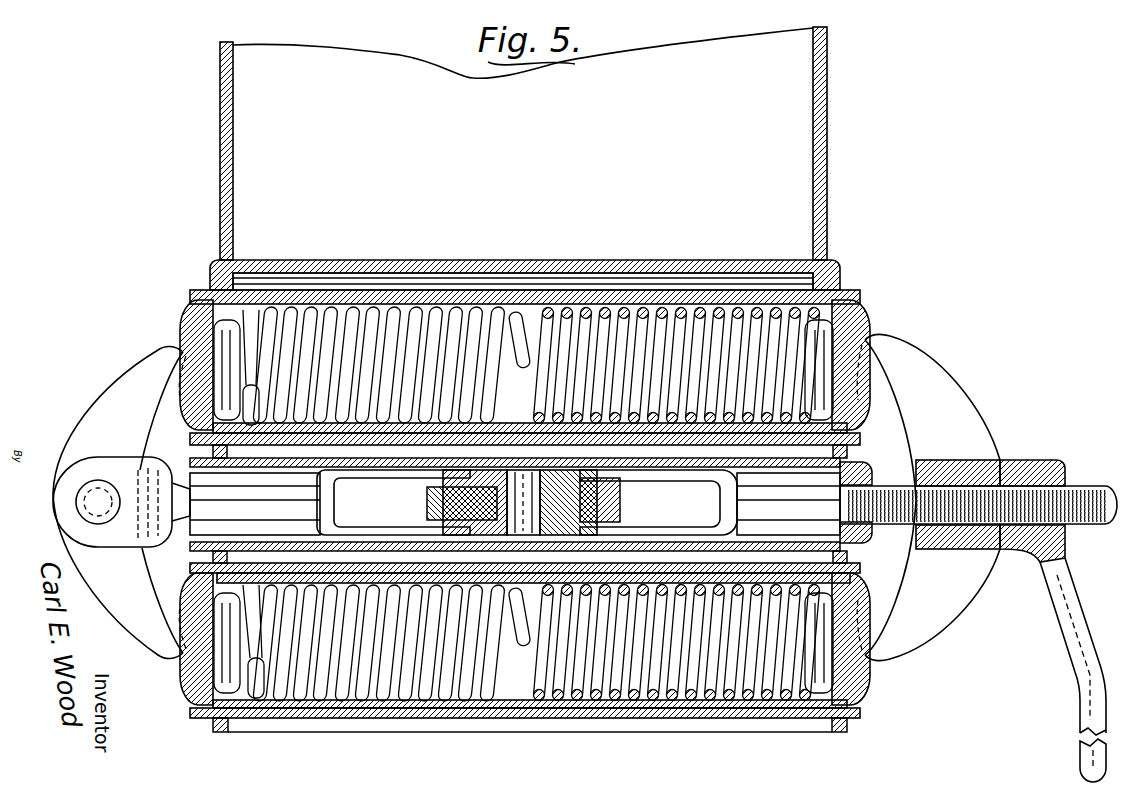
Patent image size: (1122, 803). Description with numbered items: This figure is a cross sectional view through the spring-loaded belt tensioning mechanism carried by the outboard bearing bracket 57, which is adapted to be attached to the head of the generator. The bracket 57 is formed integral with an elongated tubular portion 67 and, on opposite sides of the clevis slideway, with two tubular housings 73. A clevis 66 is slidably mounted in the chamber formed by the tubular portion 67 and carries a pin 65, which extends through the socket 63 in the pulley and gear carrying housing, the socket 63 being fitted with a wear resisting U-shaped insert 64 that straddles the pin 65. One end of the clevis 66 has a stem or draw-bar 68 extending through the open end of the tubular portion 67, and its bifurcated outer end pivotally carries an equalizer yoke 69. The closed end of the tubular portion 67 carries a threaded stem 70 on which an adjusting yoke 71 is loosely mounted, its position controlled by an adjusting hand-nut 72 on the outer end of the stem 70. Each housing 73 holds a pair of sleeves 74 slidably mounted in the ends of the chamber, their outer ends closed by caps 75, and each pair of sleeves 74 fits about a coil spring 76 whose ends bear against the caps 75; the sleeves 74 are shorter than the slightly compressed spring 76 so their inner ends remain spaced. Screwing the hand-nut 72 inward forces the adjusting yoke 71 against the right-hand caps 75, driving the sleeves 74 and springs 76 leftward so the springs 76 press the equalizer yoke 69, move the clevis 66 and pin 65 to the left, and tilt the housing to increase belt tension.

The bracket 57 is at (333, 65).
The socket 63 is at (427, 511).
The U-shaped insert 64 is at (505, 470).
The pin 65 is at (527, 478).
The clevis 66 is at (676, 535).
The tubular portion 67 is at (772, 540).
The stem or draw-bar 68 is at (243, 512).
The equalizer yoke 69 is at (70, 446).
The threaded stem 70 is at (890, 490).
The adjusting yoke 71 is at (994, 442).
The adjusting hand-nut 72 is at (1027, 462).
The tubular housing 73 is at (290, 292).
The sleeve 74 is at (371, 305).
The cap 75 is at (188, 325).
The coil spring 76 is at (535, 310).